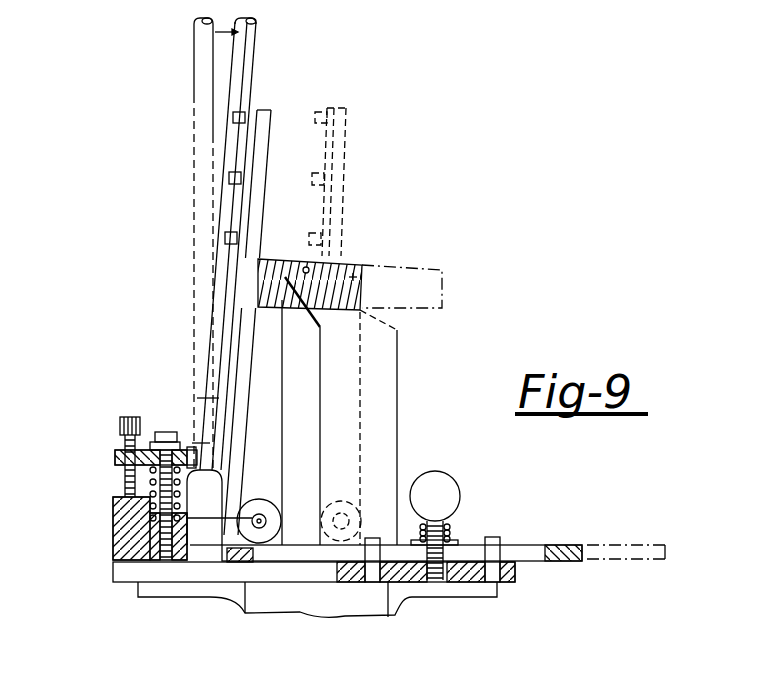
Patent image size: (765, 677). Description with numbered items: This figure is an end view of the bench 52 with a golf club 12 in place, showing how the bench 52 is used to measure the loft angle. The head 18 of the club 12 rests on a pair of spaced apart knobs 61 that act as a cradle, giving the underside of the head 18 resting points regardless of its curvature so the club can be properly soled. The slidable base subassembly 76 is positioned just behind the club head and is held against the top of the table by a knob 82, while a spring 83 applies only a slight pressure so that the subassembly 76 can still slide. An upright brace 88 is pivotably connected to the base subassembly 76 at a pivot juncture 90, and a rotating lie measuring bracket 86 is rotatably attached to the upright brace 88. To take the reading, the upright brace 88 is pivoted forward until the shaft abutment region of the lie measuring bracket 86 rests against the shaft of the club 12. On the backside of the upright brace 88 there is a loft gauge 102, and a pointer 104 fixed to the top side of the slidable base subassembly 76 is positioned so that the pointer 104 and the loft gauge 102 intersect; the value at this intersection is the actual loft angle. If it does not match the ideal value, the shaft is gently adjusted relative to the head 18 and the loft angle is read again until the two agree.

The golf club 12 is at (245, 62).
The rotating lie measuring bracket 86 is at (252, 100).
The upright brace 88 is at (273, 112).
The loft gauge 102 is at (340, 280).
The pointer 104 is at (302, 401).
The knob 82 is at (432, 487).
The spring 83 is at (452, 530).
The bench 52 is at (505, 535).
The slidable base subassembly 76 is at (545, 553).
The head 18 is at (128, 478).
The pivot juncture 90 is at (113, 523).
The knobs 61 is at (115, 556).